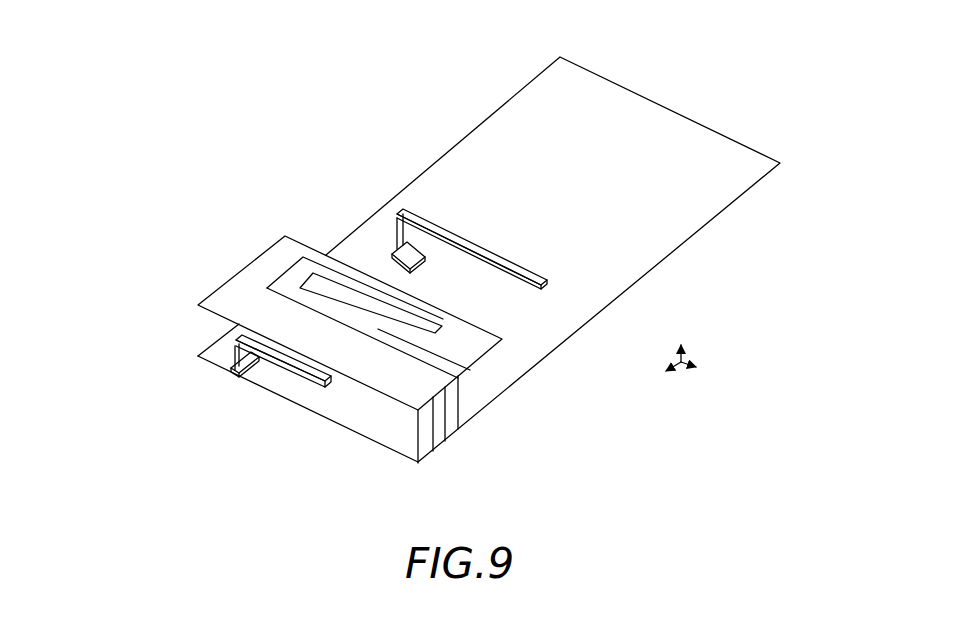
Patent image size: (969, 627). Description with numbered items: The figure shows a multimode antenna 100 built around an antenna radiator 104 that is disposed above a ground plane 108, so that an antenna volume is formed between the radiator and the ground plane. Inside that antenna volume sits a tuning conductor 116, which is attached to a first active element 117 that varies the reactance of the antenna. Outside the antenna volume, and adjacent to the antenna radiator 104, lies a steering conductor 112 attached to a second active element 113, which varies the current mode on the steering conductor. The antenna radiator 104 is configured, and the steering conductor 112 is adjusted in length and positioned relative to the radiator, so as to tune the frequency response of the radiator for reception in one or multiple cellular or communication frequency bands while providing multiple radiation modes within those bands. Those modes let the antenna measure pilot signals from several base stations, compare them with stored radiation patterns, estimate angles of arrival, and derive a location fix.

The multimode antenna 100 is at (226, 62).
The antenna radiator 104 is at (240, 306).
The ground plane 108 is at (652, 218).
The steering conductor 112 is at (441, 218).
The second active element 113 is at (388, 243).
The tuning conductor 116 is at (293, 367).
The first active element 117 is at (233, 368).